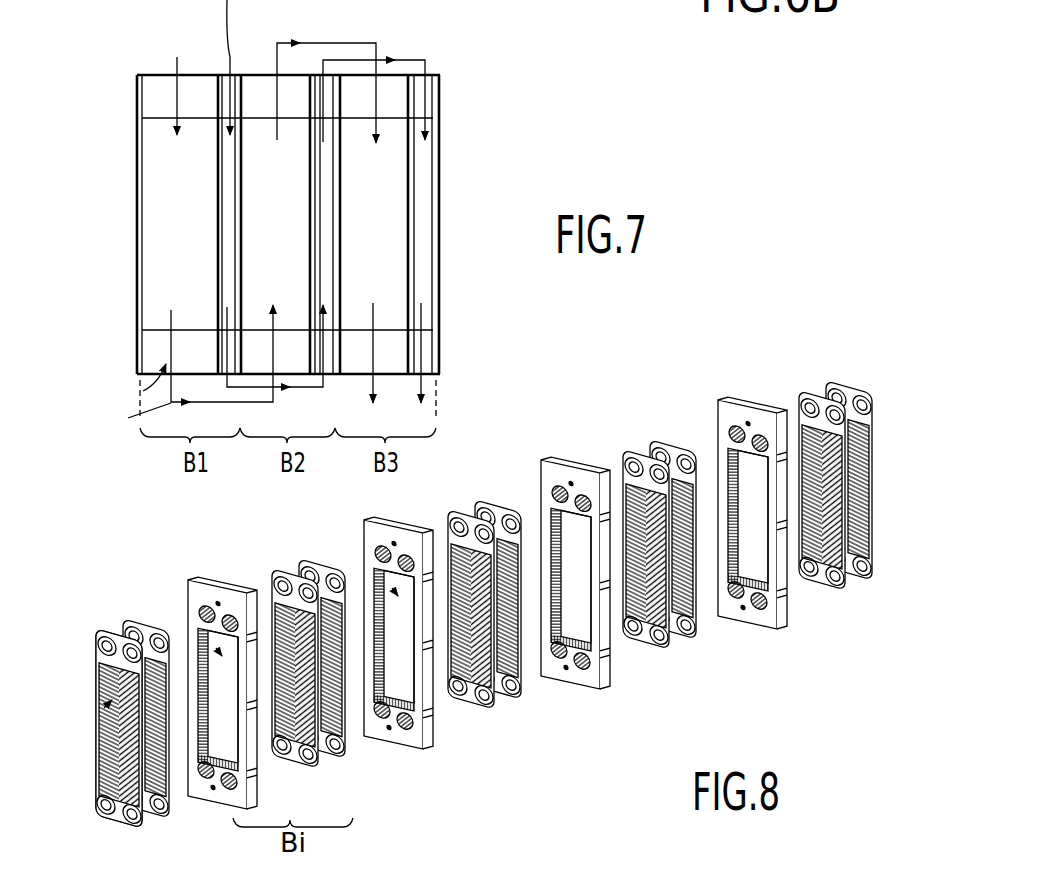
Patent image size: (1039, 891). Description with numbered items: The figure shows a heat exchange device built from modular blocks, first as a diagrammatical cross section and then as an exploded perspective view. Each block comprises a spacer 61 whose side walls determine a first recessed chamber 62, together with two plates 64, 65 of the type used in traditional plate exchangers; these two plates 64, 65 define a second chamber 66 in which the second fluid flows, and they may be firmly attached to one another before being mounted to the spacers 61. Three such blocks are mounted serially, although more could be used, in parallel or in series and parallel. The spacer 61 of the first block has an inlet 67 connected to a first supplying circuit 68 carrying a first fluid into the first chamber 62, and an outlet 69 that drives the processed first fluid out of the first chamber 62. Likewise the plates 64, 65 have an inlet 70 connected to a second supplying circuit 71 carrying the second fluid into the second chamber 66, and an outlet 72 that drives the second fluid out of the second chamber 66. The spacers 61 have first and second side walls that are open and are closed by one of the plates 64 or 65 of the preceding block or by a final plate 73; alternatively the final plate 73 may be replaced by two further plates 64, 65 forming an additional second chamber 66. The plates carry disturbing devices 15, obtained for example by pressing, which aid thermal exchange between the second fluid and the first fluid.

In FIG. 8, the disturbing devices 15 is at (100, 710).
In FIG. 7, the spacer 61 is at (267, 90).
In FIG. 8, the spacer 61 is at (212, 577).
In FIG. 7, the first recessed chamber 62 is at (188, 226).
In FIG. 8, the first recessed chamber 62 is at (197, 628).
In FIG. 7, the plate 64 is at (310, 172).
In FIG. 8, the plate 64 is at (93, 812).
In FIG. 7, the plate 65 is at (333, 160).
In FIG. 8, the plate 65 is at (158, 817).
In FIG. 7, the second chamber 66 is at (227, 178).
In FIG. 8, the second chamber 66 is at (157, 765).
In FIG. 7, the inlet 67 is at (186, 74).
In FIG. 7, the first supplying circuit 68 is at (177, 57).
In FIG. 7, the outlet 69 is at (140, 391).
In FIG. 7, the inlet 70 is at (233, 73).
In FIG. 7, the second supplying circuit 71 is at (437, 420).
In FIG. 7, the outlet 72 is at (135, 423).
In FIG. 7, the final plate 73 is at (138, 173).